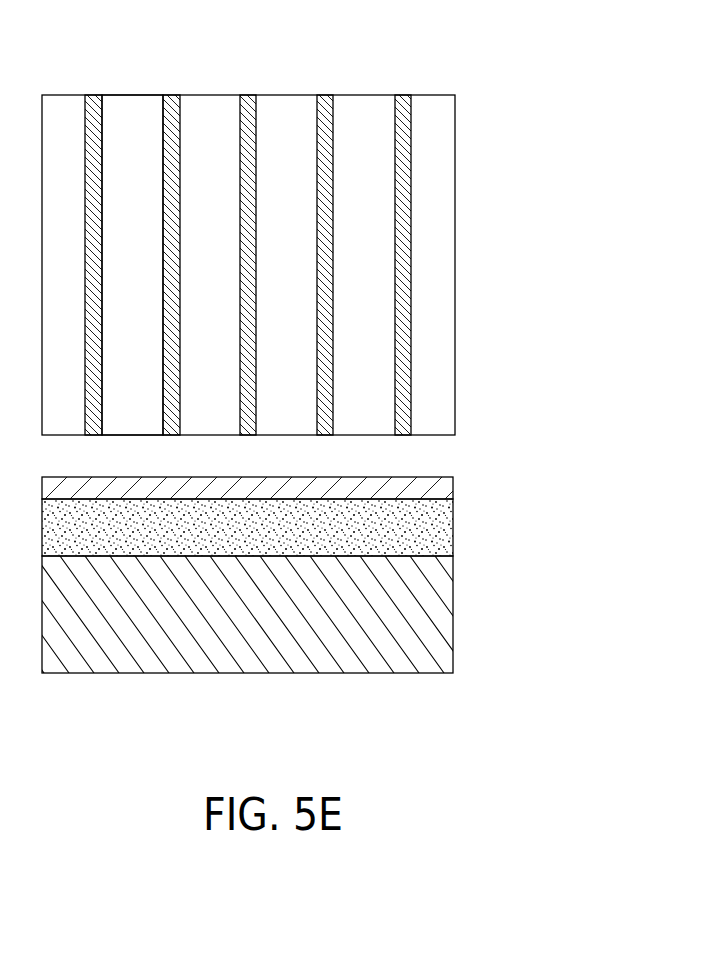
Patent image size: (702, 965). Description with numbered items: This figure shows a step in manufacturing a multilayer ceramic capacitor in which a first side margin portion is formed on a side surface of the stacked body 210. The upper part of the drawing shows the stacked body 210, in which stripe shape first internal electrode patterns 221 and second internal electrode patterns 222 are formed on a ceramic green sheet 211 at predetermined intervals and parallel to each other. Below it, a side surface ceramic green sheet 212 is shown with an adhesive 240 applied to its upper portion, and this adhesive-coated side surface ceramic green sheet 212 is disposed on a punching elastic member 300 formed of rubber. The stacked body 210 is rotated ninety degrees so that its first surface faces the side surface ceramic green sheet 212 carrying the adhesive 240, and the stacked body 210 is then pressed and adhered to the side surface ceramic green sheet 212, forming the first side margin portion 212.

The stacked body 210 is at (460, 130).
The ceramic green sheet 211 is at (279, 102).
The first internal electrode patterns 221 is at (88, 95).
The second internal electrode patterns 222 is at (175, 95).
The adhesive 240 is at (453, 480).
The side surface ceramic green sheet 212 is at (453, 533).
The punching elastic member 300 is at (453, 618).